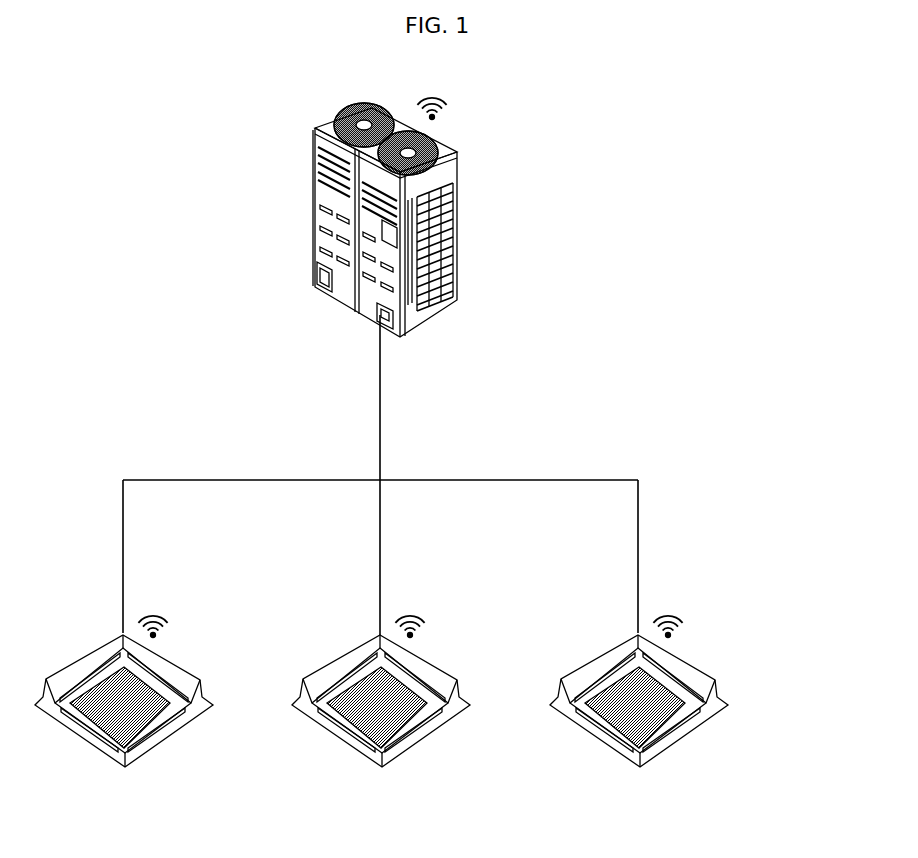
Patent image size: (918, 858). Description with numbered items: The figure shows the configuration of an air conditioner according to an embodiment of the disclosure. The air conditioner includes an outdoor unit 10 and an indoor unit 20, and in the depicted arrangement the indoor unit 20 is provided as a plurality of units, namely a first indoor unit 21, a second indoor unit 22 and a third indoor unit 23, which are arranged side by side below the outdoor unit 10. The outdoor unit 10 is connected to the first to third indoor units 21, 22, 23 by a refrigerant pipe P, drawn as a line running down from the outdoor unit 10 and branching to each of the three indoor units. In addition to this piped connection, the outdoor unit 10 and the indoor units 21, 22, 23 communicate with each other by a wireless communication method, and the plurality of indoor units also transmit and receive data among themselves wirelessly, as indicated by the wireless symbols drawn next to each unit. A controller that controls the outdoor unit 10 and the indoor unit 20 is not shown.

The outdoor unit 10 is at (452, 155).
The indoor unit 20 is at (766, 635).
The first indoor unit 21 is at (160, 748).
The second indoor unit 22 is at (416, 749).
The third indoor unit 23 is at (672, 746).
The refrigerant pipe P is at (593, 480).